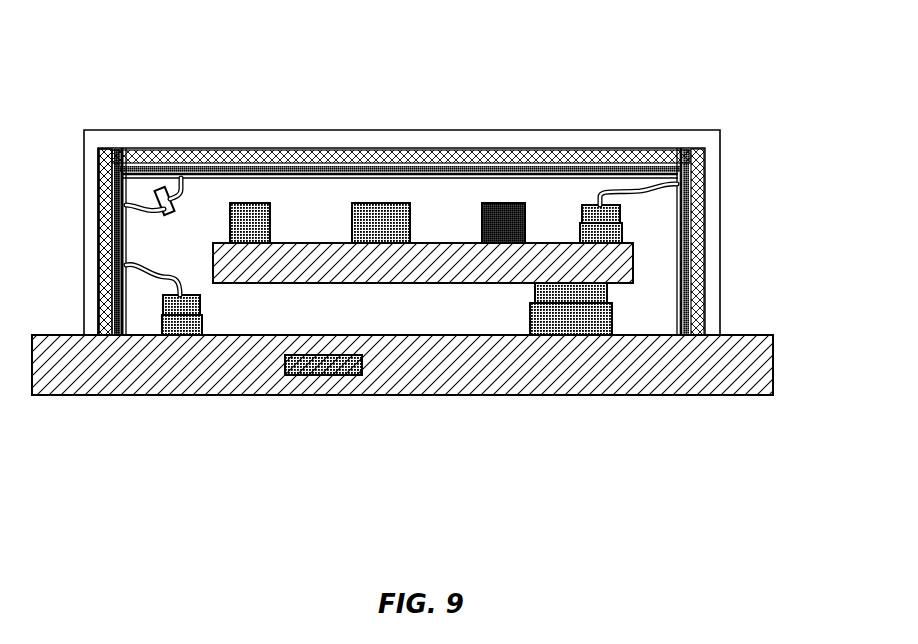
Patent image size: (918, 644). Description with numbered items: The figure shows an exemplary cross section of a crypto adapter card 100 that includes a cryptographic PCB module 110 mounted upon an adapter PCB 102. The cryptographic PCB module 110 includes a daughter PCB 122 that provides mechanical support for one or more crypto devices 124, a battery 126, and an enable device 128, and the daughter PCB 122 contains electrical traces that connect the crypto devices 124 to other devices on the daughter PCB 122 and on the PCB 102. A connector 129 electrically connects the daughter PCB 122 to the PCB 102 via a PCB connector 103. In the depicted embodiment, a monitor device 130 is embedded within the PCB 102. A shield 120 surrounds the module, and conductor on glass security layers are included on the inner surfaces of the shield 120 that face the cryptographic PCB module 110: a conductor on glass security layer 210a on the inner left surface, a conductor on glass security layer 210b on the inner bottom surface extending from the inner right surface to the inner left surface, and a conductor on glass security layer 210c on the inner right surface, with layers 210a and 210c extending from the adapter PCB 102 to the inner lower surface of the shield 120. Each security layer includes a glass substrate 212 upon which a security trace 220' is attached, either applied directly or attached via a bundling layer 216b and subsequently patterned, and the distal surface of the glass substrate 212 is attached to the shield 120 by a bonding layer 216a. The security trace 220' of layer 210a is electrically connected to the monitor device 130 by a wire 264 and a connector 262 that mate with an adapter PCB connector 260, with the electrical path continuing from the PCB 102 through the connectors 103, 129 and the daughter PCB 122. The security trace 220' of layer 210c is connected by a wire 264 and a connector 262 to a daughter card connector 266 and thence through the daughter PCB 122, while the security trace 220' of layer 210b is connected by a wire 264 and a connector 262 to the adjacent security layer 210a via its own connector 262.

The crypto adapter card 100 is at (693, 49).
The PCB 102 is at (757, 355).
The PCB connector 103 is at (552, 330).
The cryptographic PCB module 110 is at (736, 104).
The shield 120 is at (720, 212).
The daughter PCB 122 is at (633, 262).
The crypto devices 124 is at (500, 215).
The battery 126 is at (248, 222).
The enable device 128 is at (390, 215).
The connector 129 is at (585, 295).
The monitor device 130 is at (312, 365).
The conductor on glass security layer 210a is at (70, 254).
The conductor on glass security layer 210b is at (196, 120).
The conductor on glass security layer 210c is at (737, 162).
The glass substrate 212 is at (110, 336).
The bonding layer 216a is at (98, 336).
The bundling layer 216b is at (119, 336).
The security trace 220' is at (176, 292).
The adapter PCB connector 260 is at (202, 322).
The connector 262 is at (163, 197).
The wire 264 is at (173, 190).
The daughter card connector 266 is at (622, 232).